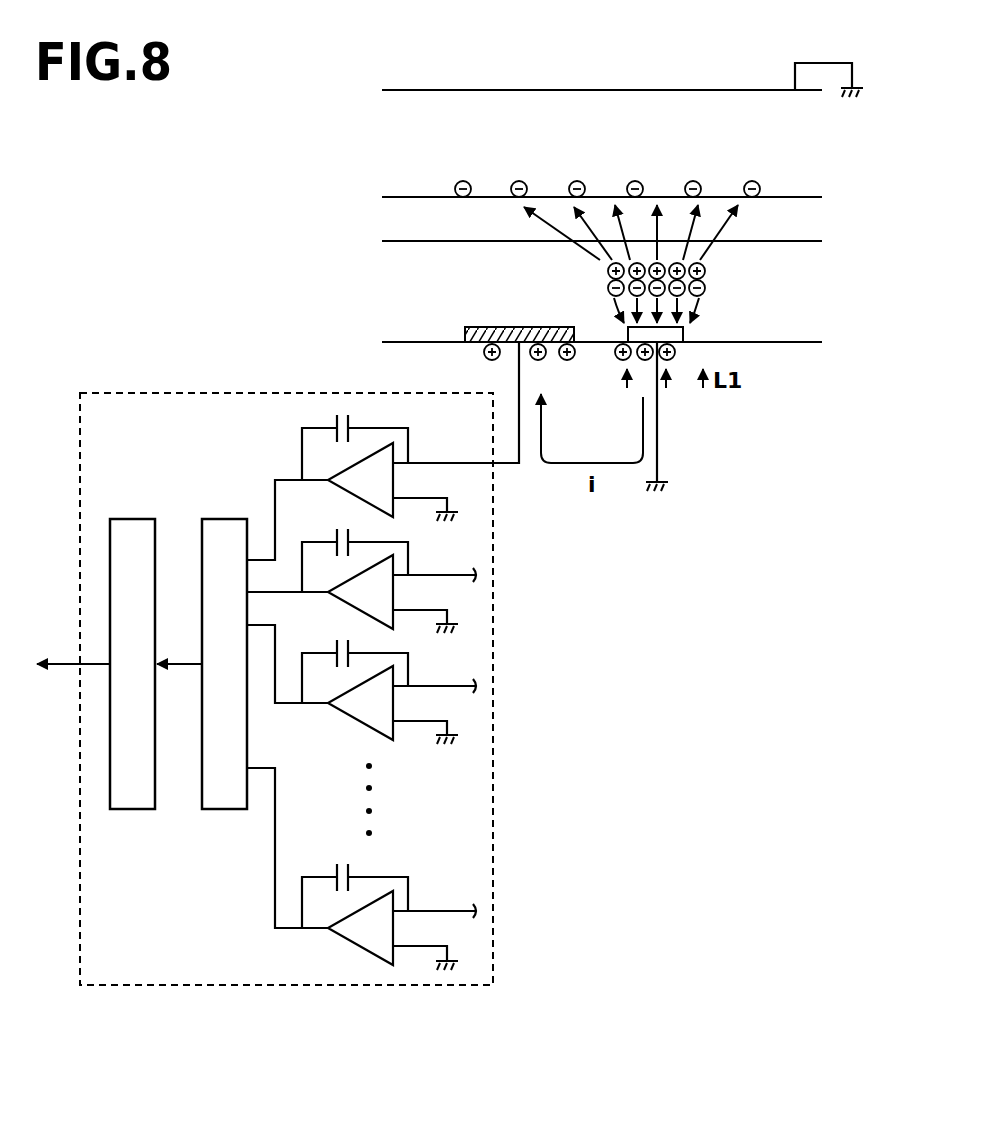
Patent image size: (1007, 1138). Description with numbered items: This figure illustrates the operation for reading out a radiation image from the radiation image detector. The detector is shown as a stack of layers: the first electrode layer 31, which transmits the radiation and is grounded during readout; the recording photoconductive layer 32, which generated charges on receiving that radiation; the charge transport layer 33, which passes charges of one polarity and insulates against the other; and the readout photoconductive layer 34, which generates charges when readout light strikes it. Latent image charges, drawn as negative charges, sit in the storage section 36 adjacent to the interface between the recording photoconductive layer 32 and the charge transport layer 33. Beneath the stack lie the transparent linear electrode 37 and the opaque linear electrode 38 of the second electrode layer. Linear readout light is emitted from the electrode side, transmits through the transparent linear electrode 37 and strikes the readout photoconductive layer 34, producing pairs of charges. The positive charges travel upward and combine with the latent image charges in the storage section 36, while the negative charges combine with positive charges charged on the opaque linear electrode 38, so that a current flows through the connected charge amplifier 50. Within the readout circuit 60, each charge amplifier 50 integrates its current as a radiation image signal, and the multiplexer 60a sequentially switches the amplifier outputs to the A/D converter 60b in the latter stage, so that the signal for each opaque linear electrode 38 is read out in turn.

The first electrode layer 31 is at (392, 90).
The recording photoconductive layer 32 is at (392, 134).
The charge transport layer 33 is at (392, 217).
The readout photoconductive layer 34 is at (392, 260).
The storage section 36 is at (410, 196).
The transparent linear electrode 37 is at (680, 335).
The opaque linear electrode 38 is at (470, 327).
The charge amplifier 50 is at (395, 480).
The readout circuit 60 is at (493, 787).
The multiplexer 60a is at (224, 809).
The A/D converter 60b is at (132, 809).